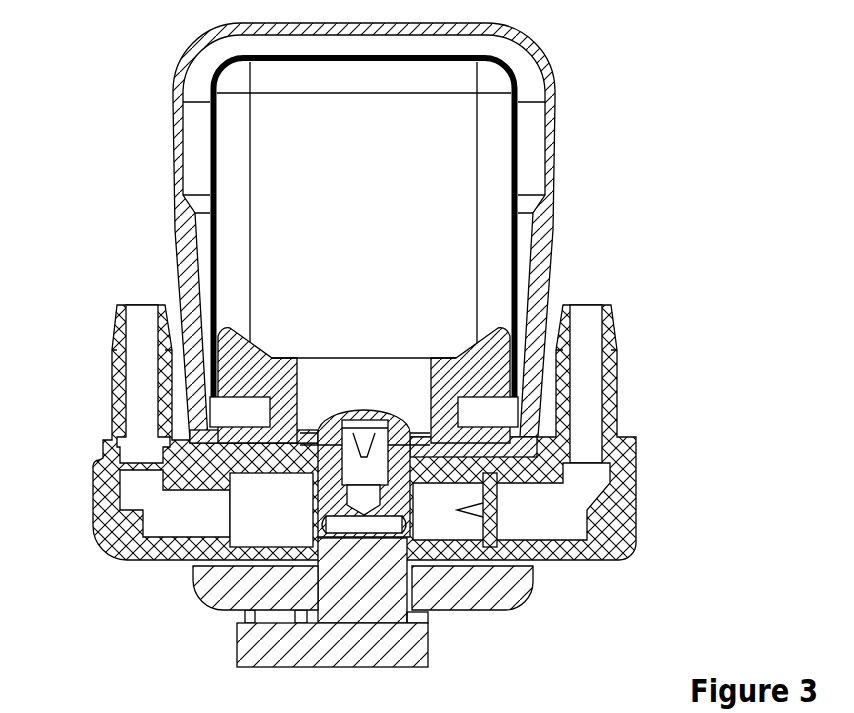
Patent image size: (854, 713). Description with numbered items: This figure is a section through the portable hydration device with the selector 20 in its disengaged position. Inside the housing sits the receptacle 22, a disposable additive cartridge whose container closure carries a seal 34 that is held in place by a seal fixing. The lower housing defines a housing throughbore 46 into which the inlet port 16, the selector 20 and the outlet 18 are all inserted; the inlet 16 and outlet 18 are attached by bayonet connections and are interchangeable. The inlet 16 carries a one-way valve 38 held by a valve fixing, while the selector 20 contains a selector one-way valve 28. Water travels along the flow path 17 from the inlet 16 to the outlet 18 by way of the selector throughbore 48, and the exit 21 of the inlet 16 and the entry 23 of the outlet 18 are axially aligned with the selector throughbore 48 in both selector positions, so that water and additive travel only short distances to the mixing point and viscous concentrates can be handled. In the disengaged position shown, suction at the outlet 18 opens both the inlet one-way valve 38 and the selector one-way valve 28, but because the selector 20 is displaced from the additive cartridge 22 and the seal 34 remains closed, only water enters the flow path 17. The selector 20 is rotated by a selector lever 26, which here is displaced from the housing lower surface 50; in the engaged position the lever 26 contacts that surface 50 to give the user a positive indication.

The inlet port 16 is at (612, 365).
The flow path 17 is at (300, 520).
The outlet 18 is at (115, 397).
The selector 20 is at (312, 665).
The exit of the inlet 21 is at (560, 498).
The receptacle 22 is at (495, 125).
The entry of the outlet 23 is at (215, 508).
The selector lever 26 is at (445, 633).
The selector one-way valve 28 is at (373, 428).
The seal 34 is at (360, 425).
The one-way valve 38 is at (492, 510).
The housing throughbore 46 is at (597, 560).
The selector throughbore 48 is at (352, 530).
The housing lower surface 50 is at (442, 605).